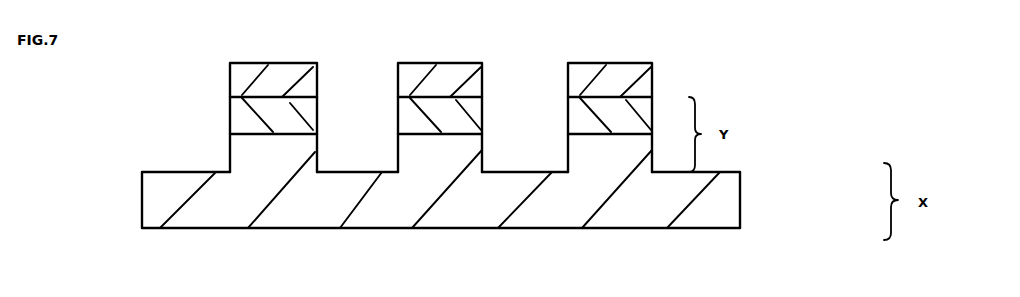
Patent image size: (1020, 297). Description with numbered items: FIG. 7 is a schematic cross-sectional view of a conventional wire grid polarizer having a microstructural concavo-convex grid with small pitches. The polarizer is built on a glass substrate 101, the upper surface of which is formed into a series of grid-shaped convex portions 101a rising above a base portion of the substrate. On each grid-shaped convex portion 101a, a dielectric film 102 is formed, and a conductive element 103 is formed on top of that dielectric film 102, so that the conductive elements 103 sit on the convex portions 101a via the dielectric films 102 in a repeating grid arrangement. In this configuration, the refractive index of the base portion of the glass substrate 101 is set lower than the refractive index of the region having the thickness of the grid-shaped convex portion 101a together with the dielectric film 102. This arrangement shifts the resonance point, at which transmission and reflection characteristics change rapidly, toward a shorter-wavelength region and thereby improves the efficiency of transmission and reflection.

The glass substrate 101 is at (705, 208).
The grid-shaped convex portion 101a is at (250, 163).
The dielectric film 102 is at (580, 118).
The conductive element 103 is at (645, 85).